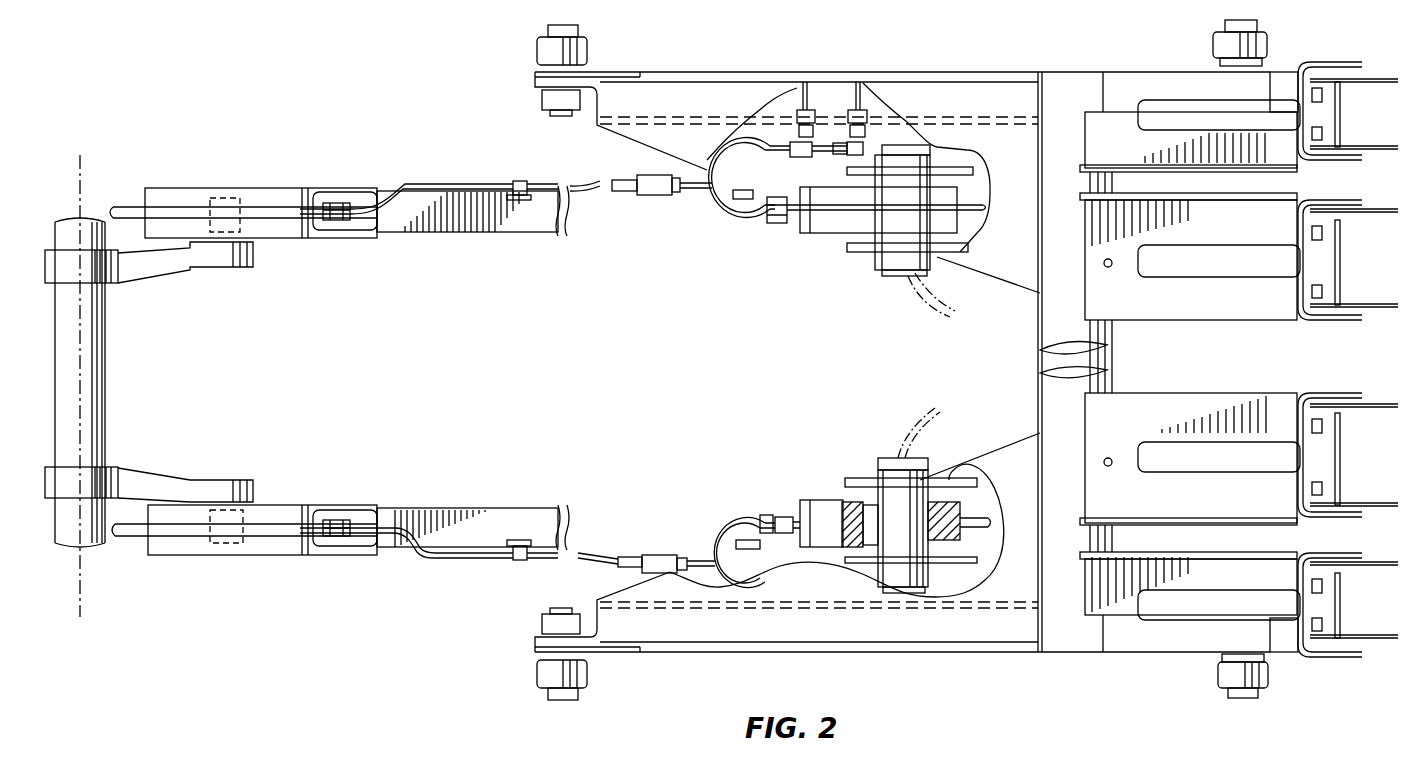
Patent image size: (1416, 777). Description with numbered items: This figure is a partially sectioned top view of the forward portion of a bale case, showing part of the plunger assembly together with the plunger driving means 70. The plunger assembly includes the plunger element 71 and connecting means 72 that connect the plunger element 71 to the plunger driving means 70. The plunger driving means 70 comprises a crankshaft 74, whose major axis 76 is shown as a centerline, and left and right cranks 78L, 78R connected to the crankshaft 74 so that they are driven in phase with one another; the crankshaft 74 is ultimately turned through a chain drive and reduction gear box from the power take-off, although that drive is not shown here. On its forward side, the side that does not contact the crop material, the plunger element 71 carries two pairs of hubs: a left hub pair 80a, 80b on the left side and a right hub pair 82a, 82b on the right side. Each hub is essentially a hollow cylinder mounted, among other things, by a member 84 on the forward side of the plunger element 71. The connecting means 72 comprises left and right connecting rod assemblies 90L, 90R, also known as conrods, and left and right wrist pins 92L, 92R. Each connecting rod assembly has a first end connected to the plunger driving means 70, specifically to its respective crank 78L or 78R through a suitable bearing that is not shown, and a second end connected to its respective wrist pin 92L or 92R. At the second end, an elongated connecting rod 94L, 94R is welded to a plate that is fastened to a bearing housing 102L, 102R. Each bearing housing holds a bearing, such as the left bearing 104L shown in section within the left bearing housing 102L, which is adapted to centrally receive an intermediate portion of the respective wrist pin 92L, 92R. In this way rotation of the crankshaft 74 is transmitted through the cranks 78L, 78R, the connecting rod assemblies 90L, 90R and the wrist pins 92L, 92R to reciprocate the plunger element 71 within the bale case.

The plunger driving means 70 is at (212, 140).
The plunger element 71 is at (1063, 627).
The connecting means 72 is at (442, 581).
The crankshaft 74 is at (105, 372).
The major axis 76 is at (83, 565).
The right crank 78R is at (180, 262).
The left crank 78L is at (180, 487).
The left hub 80a is at (875, 466).
The left hub 80b is at (930, 590).
The right hub 82a is at (890, 262).
The right hub 82b is at (917, 150).
The member 84 is at (975, 178).
The right connecting rod assembly 90R is at (778, 238).
The left connecting rod assembly 90L is at (789, 482).
The right wrist pin 92R is at (930, 190).
The left wrist pin 92L is at (895, 455).
The right connecting rod 94R is at (522, 222).
The left connecting rod 94L is at (528, 510).
The right bearing housing 102R is at (827, 225).
The left bearing housing 102L is at (822, 500).
The left bearing 104L is at (960, 508).